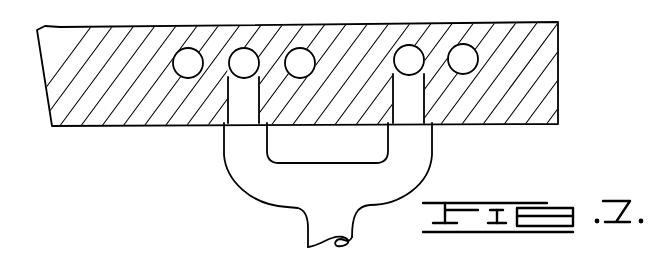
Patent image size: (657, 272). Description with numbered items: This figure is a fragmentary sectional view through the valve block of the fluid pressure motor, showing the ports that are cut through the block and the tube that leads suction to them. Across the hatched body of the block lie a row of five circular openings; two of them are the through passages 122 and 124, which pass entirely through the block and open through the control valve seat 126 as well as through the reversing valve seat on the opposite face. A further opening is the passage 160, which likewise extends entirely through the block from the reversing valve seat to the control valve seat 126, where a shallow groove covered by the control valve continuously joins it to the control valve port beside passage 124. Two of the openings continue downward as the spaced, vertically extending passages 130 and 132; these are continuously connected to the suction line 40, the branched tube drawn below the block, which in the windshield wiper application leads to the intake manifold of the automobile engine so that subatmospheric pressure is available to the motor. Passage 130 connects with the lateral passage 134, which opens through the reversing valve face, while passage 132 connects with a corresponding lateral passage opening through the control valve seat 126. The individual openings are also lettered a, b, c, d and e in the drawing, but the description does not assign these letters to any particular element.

The through passage 124 is at (184, 49).
The coolant passage e is at (177, 51).
The control valve seat 126 is at (240, 50).
The coolant passage d is at (248, 51).
The vertically extending passage 132 is at (232, 110).
The through passage 122 is at (302, 48).
The coolant passage c is at (311, 49).
The lateral passage 134 is at (419, 47).
The coolant passage b is at (415, 46).
The vertically extending passage 130 is at (418, 107).
The coolant passage a is at (467, 44).
The passage 160 is at (466, 68).
The suction line 40 is at (348, 246).